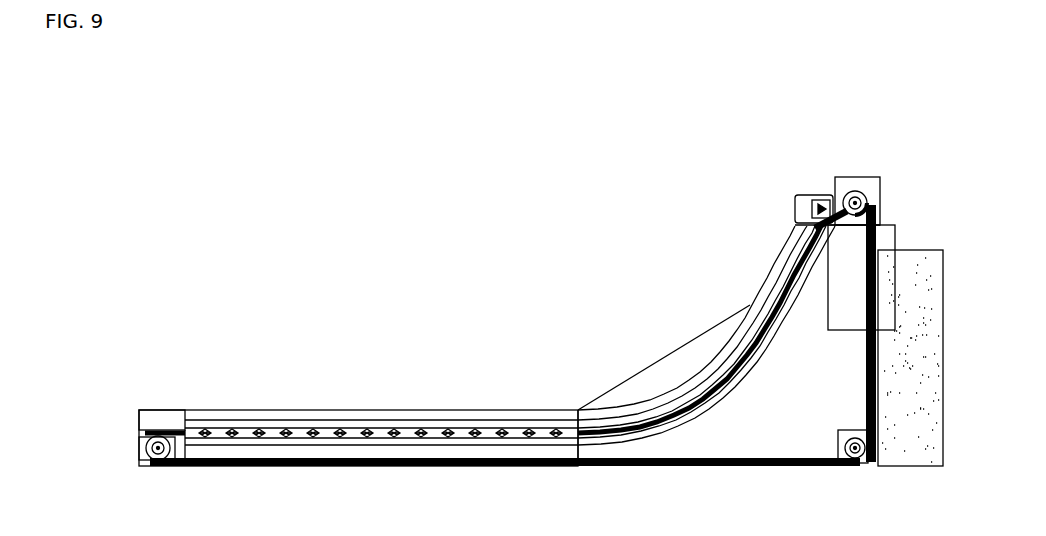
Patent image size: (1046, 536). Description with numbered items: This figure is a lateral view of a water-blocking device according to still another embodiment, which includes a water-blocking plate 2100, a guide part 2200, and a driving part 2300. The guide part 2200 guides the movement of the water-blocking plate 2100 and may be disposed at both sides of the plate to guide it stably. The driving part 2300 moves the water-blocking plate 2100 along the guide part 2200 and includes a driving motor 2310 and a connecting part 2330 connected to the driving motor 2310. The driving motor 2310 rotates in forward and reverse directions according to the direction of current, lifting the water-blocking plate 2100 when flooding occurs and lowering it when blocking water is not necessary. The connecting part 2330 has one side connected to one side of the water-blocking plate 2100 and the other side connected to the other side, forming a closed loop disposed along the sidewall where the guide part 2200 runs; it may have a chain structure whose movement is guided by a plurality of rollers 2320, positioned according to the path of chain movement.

The water-blocking plate 2100 is at (432, 430).
The guide part 2200 is at (673, 400).
The driving part 2300 is at (848, 156).
The driving motor 2310 is at (805, 192).
The rollers 2320 is at (158, 436).
The connecting part 2330 is at (878, 176).